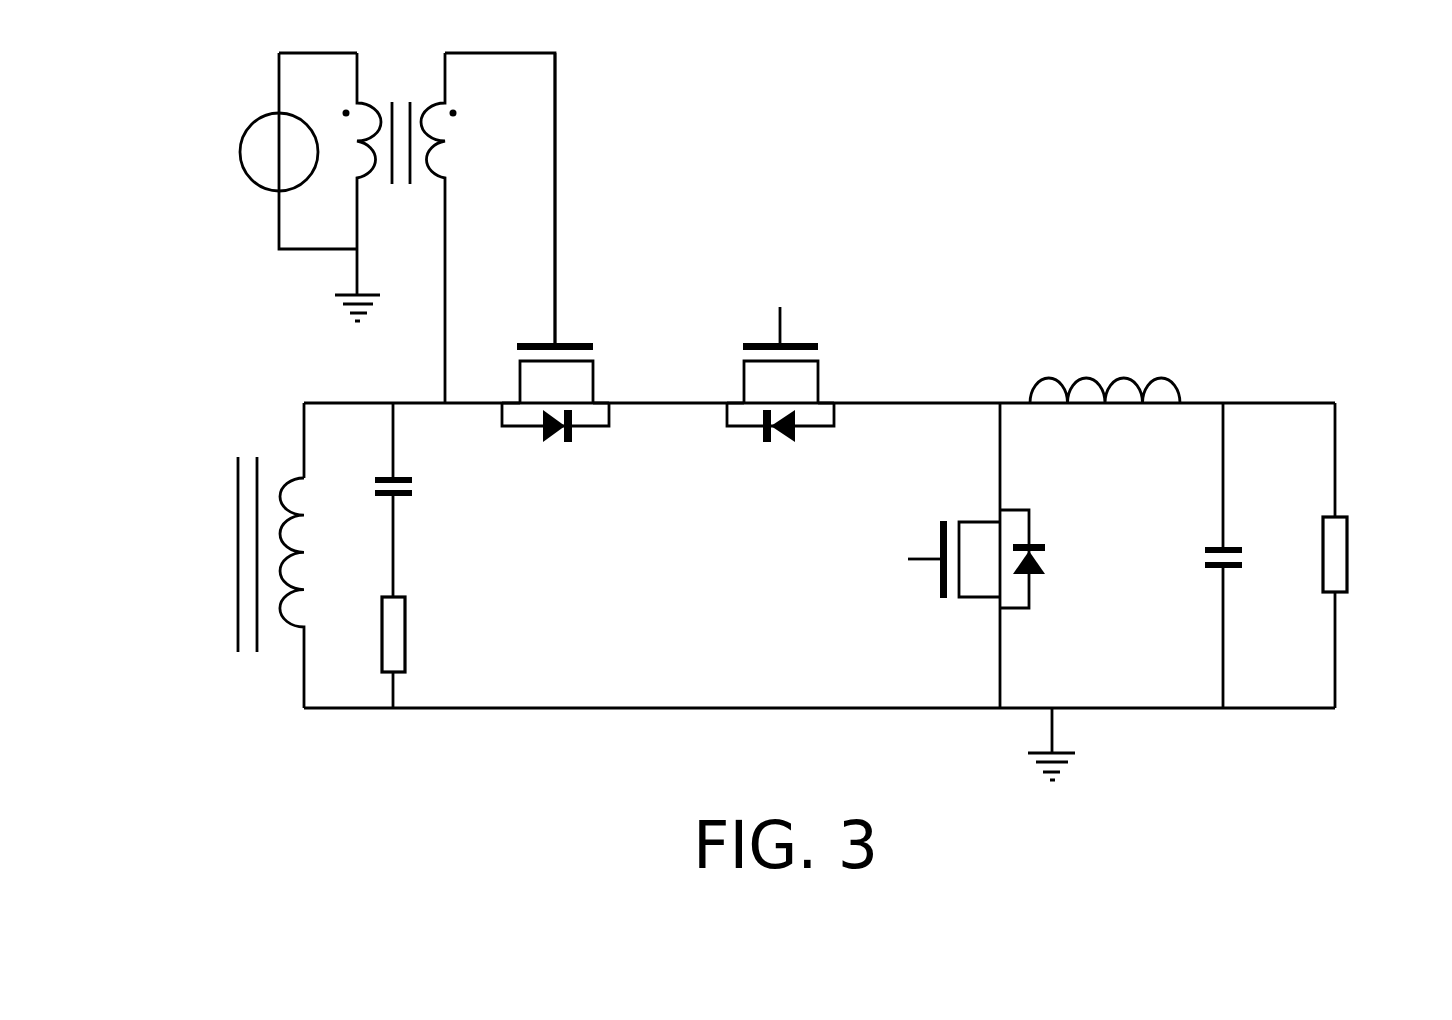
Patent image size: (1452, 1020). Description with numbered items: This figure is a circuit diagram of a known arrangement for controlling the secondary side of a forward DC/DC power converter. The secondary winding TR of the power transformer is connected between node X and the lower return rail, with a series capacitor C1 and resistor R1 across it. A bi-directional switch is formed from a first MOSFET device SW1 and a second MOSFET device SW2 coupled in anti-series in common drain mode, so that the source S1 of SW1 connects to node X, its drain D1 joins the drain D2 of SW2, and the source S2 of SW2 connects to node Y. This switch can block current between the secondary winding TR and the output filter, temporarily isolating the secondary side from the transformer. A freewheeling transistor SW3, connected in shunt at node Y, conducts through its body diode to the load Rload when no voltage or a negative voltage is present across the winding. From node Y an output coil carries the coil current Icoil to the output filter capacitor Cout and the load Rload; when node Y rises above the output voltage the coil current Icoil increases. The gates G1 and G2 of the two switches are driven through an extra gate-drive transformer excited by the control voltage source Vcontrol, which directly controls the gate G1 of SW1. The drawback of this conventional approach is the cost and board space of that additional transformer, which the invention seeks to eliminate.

The control voltage source Vcontrol is at (236, 151).
The node X is at (317, 419).
The node Y is at (973, 435).
The transformer secondary winding TR is at (270, 603).
The capacitor C1 is at (413, 500).
The resistor R1 is at (418, 652).
The first MOSFET device SW1 is at (555, 415).
The second MOSFET device SW2 is at (780, 415).
The freewheeling diode SW3 is at (1014, 609).
The gate of first switch G1 is at (581, 198).
The gate of second switch G2 is at (751, 322).
The source of first switch S1 is at (496, 382).
The drain of first switch D1 is at (621, 382).
The drain of second switch D2 is at (720, 382).
The source of second switch S2 is at (844, 382).
The coil current Icoil is at (1152, 360).
The first output filter Cout is at (1250, 555).
The load Rload is at (1379, 555).